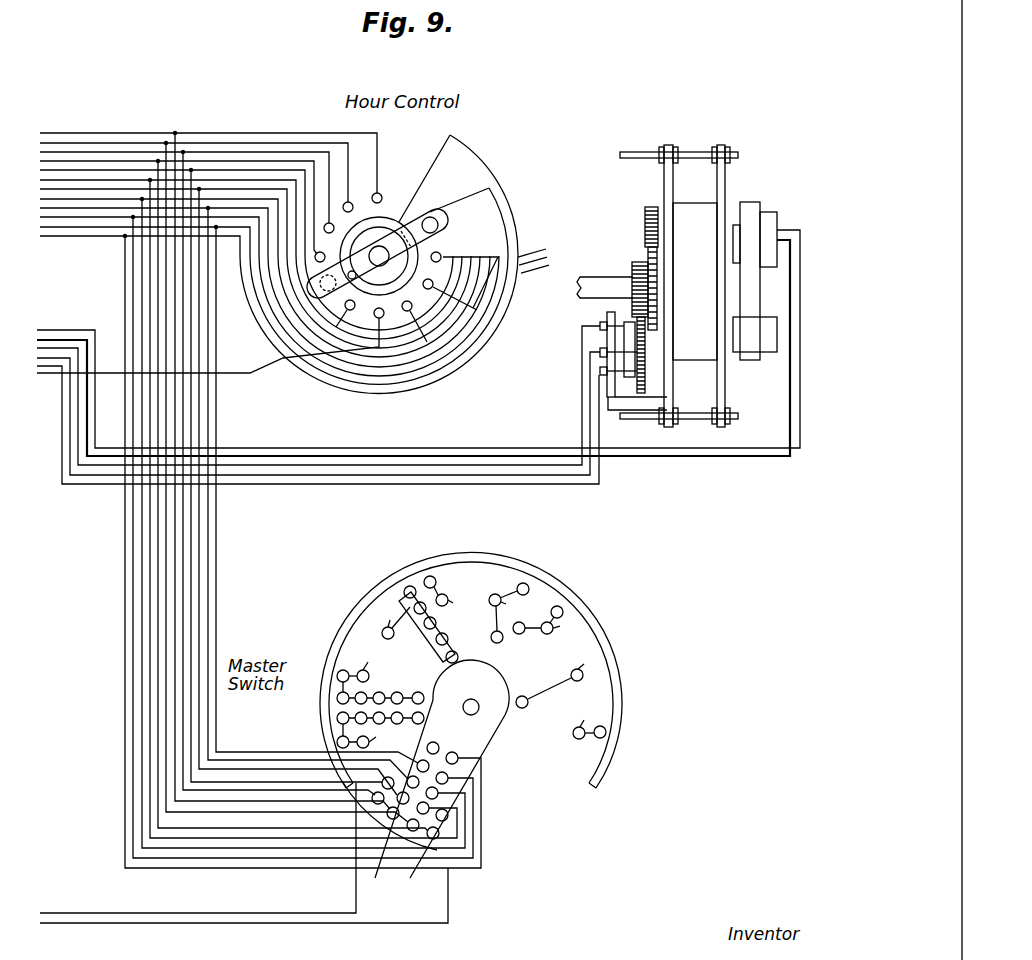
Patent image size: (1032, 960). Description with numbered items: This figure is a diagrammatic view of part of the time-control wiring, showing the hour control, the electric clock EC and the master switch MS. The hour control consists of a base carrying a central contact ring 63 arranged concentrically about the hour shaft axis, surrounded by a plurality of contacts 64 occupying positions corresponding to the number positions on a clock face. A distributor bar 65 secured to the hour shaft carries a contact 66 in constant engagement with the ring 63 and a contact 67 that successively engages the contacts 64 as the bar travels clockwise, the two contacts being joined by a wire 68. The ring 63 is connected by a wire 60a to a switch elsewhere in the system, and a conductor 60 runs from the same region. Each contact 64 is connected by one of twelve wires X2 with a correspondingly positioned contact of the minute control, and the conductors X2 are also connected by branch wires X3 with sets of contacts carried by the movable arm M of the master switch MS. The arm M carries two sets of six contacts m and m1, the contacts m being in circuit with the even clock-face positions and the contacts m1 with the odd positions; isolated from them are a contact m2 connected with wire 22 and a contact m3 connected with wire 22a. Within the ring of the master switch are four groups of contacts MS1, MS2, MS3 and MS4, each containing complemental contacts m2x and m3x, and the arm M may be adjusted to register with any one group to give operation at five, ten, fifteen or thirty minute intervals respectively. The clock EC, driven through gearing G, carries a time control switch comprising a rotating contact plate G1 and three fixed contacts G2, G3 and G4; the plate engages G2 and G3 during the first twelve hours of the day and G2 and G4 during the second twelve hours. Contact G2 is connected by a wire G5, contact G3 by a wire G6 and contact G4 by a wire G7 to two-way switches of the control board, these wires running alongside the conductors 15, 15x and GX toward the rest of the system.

The wire X2 is at (113, 142).
The branch wire X3 is at (302, 499).
The central contact ring 63 is at (383, 220).
The contacts 64 is at (442, 288).
The distributor bar 65 is at (431, 210).
The contact 66 is at (352, 267).
The contact 67 is at (434, 220).
The wire 68 is at (446, 236).
The wire 60a is at (254, 374).
The conductor 60 is at (101, 375).
The conductor 15 is at (349, 450).
The conductor 15x is at (478, 450).
The conductor GX is at (432, 456).
The wire G5 is at (563, 486).
The wire G6 is at (346, 468).
The wire G7 is at (422, 480).
The clock EC is at (648, 286).
The gear G is at (645, 247).
The contact plate G1 is at (630, 354).
The fixed contact G2 is at (600, 350).
The fixed contact G3 is at (600, 324).
The fixed contact G4 is at (600, 372).
The master switch MS is at (368, 636).
The group of contacts MS1 is at (380, 709).
The group of contacts MS2 is at (431, 613).
The group of contacts MS3 is at (526, 623).
The set of contacts MS4 is at (593, 722).
The movable arm M is at (492, 717).
The contacts m is at (436, 746).
The contacts m1 is at (458, 757).
The contact m2 is at (382, 784).
The contact m3 is at (448, 813).
The contact m2x is at (473, 676).
The contact m3x is at (481, 669).
The wire 22 is at (266, 907).
The wire 22a is at (299, 925).